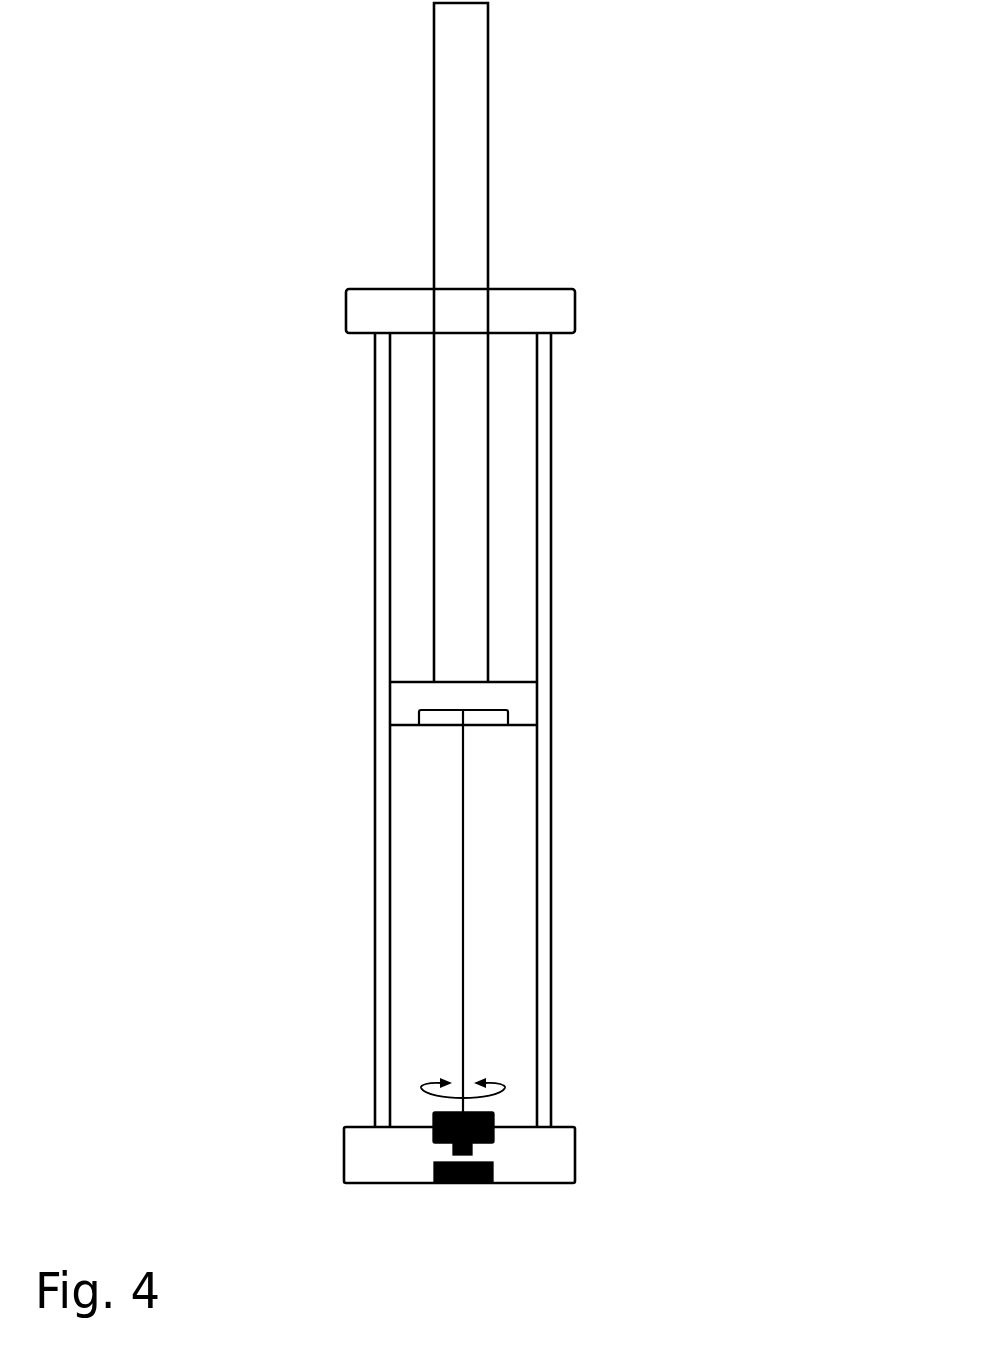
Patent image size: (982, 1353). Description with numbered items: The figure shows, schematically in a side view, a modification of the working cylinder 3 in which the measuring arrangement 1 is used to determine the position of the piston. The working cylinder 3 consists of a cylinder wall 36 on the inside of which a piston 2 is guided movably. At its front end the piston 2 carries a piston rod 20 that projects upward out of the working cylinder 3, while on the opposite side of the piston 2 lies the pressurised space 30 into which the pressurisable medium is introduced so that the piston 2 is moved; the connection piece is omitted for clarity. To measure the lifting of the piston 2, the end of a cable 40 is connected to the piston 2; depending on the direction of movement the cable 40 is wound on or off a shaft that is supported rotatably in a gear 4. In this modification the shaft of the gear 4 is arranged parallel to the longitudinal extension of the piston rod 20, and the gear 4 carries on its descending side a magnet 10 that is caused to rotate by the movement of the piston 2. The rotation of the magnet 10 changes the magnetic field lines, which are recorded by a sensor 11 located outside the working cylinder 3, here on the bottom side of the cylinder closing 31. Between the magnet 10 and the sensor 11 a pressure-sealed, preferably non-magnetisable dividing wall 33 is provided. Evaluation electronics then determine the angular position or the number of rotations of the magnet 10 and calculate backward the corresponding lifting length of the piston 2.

The measuring arrangement 1 is at (485, 1047).
The piston 2 is at (515, 695).
The working cylinder 3 is at (590, 506).
The gear 4 is at (480, 1110).
The magnet 10 is at (468, 1155).
The sensor 11 is at (472, 1185).
The piston rod 20 is at (467, 118).
The pressurised space 30 is at (446, 827).
The cylinder closing 31 is at (360, 1153).
The dividing wall 33 is at (443, 1159).
The cylinder wall 36 is at (543, 783).
The cable 40 is at (464, 860).